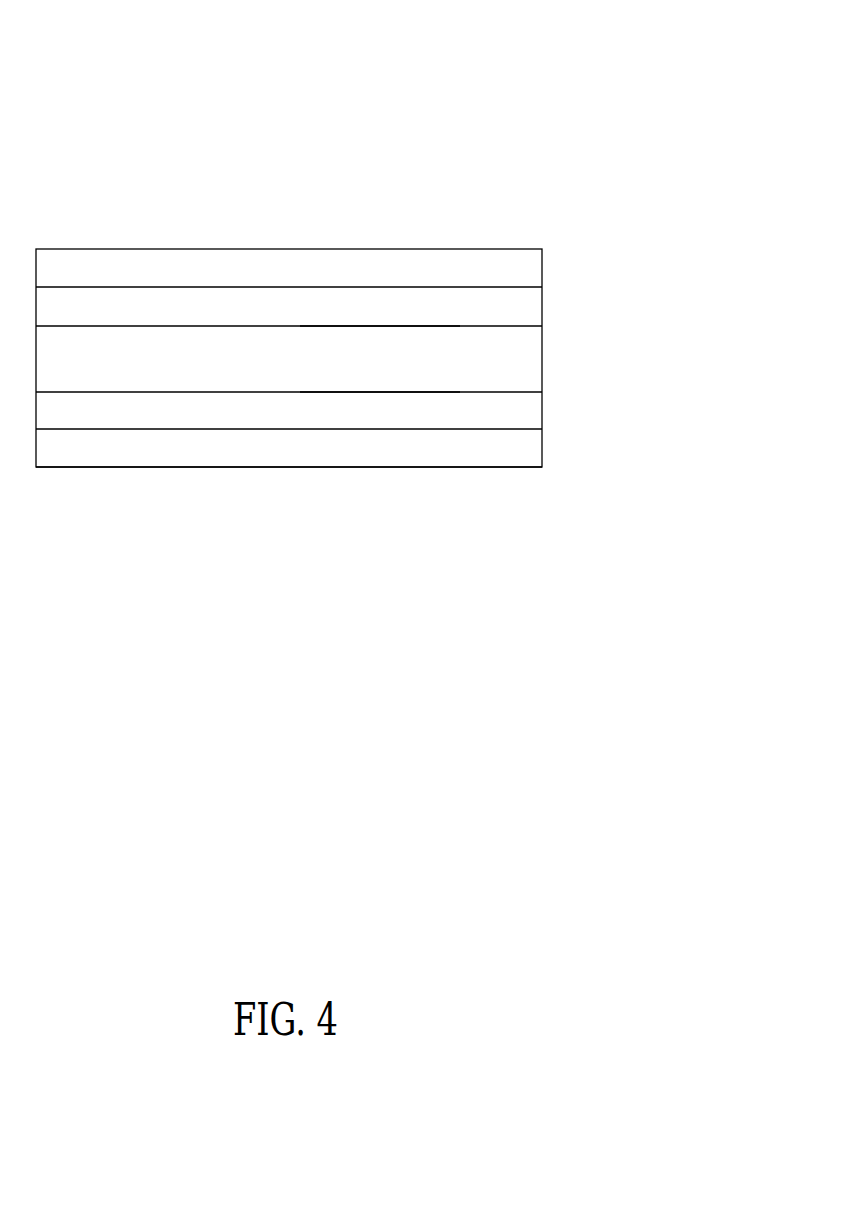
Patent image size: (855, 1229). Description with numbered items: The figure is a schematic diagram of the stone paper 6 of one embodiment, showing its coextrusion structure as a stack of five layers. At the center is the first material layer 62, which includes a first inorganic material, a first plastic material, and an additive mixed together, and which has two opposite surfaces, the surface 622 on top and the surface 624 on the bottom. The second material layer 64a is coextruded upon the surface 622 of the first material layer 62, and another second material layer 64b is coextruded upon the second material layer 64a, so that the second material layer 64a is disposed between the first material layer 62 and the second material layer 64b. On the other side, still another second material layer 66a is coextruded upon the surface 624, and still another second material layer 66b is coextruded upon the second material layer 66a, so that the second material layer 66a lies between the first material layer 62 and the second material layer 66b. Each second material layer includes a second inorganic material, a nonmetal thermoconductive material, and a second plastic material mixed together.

The stone paper 6 is at (109, 121).
The first material layer 62 is at (519, 357).
The surface 622 is at (382, 325).
The surface 624 is at (374, 392).
The second material layer 64a is at (519, 309).
The second material layer 64b is at (519, 271).
The second material layer 66a is at (519, 410).
The second material layer 66b is at (519, 448).